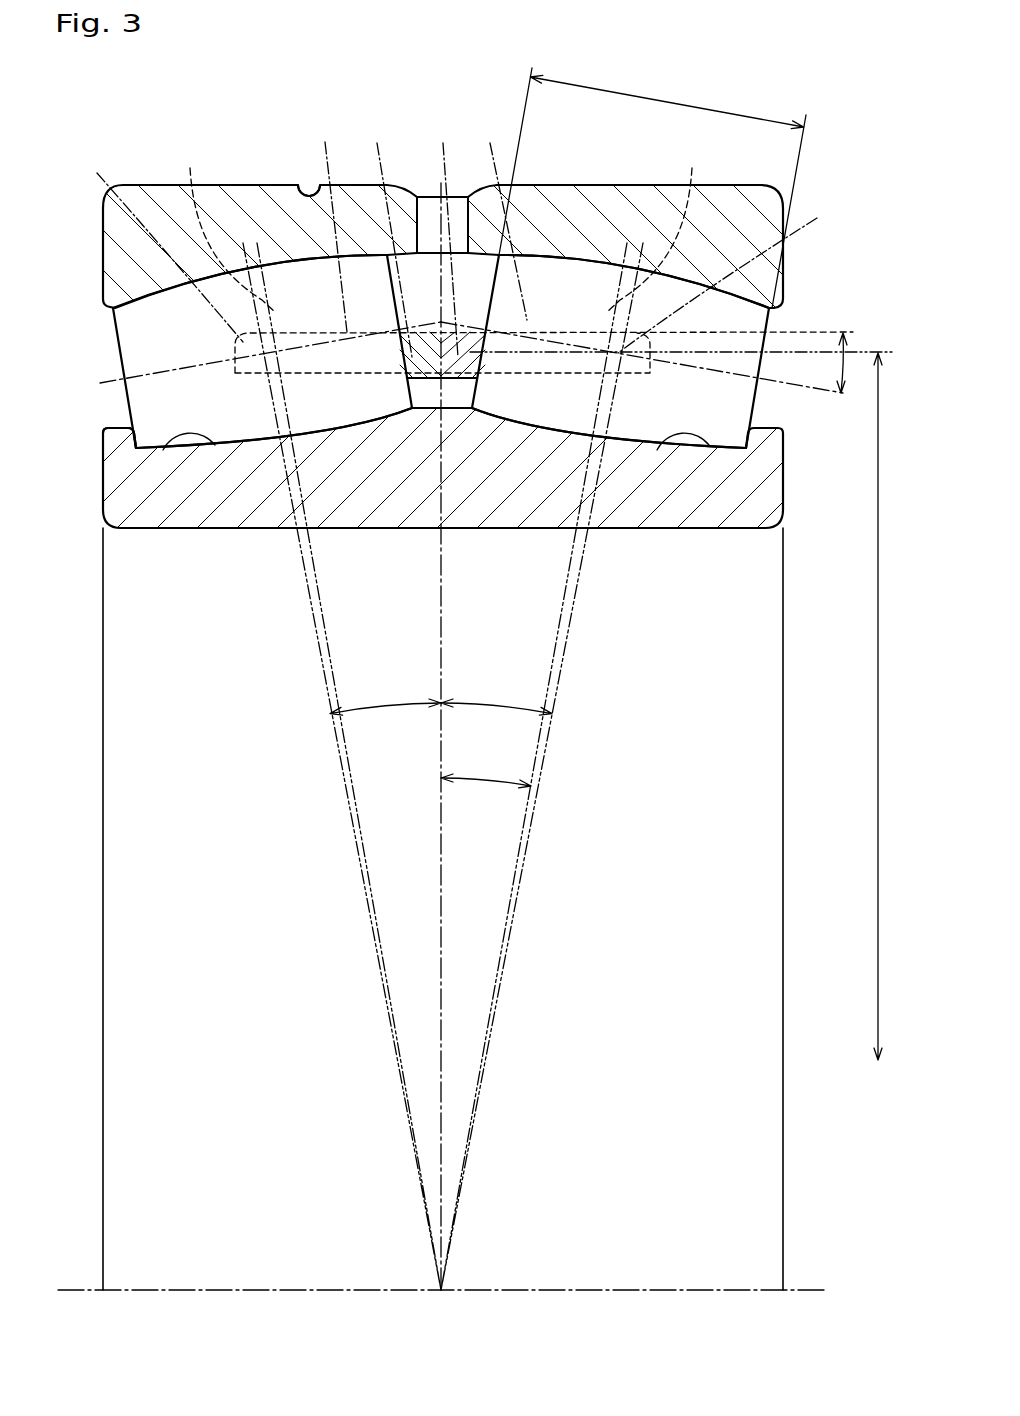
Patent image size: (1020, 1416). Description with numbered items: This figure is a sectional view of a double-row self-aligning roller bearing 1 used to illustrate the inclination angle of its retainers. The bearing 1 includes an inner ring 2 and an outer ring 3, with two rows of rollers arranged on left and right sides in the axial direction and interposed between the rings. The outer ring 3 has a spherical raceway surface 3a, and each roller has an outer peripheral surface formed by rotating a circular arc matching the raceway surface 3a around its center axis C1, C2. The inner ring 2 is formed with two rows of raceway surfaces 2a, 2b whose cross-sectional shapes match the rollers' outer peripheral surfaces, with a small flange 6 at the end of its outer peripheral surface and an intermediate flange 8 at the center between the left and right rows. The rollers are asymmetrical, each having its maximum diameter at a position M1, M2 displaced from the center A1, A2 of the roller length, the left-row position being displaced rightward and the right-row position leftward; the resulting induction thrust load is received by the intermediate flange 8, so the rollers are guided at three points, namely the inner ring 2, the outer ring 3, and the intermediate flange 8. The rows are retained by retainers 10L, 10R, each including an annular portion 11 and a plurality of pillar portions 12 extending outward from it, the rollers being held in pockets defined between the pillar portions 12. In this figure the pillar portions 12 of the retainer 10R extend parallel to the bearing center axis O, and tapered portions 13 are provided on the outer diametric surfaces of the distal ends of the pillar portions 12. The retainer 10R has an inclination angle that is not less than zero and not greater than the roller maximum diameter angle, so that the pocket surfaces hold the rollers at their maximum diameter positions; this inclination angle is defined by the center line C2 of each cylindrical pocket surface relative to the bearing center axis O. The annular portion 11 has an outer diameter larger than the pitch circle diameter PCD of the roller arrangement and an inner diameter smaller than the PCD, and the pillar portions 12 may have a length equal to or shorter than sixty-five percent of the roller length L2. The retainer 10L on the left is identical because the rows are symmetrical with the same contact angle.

The self-aligning roller bearing 1 is at (140, 140).
The inner ring 2 is at (243, 498).
The raceway surface 2a is at (163, 450).
The raceway surface 2b is at (660, 452).
The outer ring 3 is at (130, 241).
The raceway surface 3a is at (289, 184).
The small flange 6 is at (117, 433).
The intermediate flange 8 is at (436, 380).
The retainer 10L is at (405, 122).
The retainer 10R is at (517, 122).
The annular portion 11 is at (411, 236).
The pillar portion 12 is at (418, 224).
The tapered portion 13 is at (458, 251).
The center of roller length A1 is at (223, 228).
The center of roller length A2 is at (659, 228).
The maximum diameter position M1 is at (268, 235).
The maximum diameter position M2 is at (594, 238).
The center axis C1 is at (163, 372).
The center axis C2 is at (783, 388).
The roller length L2 is at (652, 188).
The pitch circle diameter PCD is at (877, 918).
The bearing center axis O is at (812, 1285).